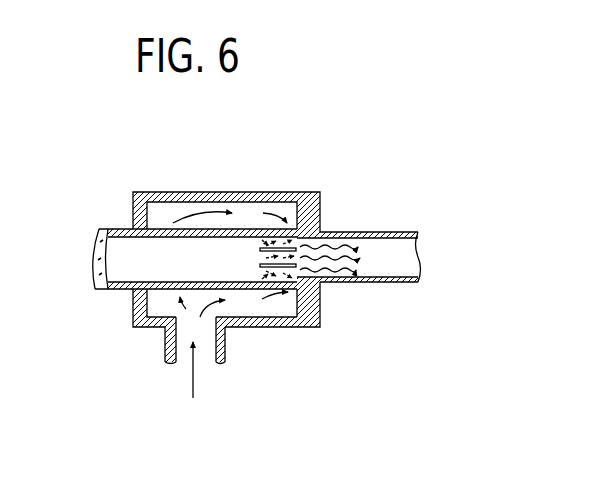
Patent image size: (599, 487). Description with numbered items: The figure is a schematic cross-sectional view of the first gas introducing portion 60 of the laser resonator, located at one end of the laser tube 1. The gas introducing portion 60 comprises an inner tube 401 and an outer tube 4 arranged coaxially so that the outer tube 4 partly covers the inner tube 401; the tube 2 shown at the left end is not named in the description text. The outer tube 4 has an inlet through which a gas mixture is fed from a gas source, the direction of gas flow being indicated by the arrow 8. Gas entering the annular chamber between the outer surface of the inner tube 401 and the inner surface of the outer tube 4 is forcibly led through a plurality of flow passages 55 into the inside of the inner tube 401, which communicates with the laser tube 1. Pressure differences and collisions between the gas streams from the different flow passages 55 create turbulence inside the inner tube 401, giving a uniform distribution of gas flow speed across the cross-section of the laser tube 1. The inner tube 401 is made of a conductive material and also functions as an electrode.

The laser tube 1 is at (402, 232).
The inlet tube 2 is at (100, 240).
The outer tube 4 is at (190, 192).
The arrow indicating direction of gas flow 8 is at (193, 380).
The flow passages 55 is at (273, 247).
The first gas introducing portion 60 is at (257, 170).
The inner tube 401 is at (167, 290).